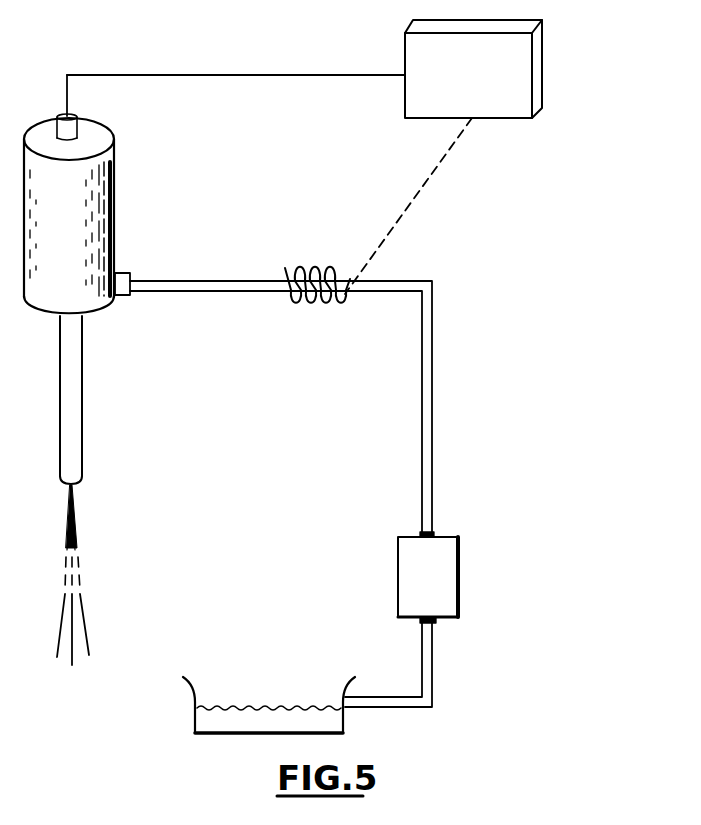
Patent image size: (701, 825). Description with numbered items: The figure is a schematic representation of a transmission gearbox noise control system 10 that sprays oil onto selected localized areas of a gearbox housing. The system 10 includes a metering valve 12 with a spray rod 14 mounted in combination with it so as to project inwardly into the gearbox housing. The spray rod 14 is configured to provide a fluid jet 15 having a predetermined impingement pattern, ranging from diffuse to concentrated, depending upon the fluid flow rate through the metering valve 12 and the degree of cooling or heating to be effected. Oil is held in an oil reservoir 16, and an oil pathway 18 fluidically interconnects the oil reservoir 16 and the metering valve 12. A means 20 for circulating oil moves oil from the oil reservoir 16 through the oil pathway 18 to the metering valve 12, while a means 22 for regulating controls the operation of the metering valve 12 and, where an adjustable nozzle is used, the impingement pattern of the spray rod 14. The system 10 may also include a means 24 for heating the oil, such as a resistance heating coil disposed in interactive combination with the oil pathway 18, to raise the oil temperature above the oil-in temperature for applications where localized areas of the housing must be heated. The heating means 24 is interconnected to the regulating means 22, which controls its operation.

The transmission gearbox noise control system 10 is at (540, 256).
The metering valve 12 is at (112, 184).
The spray rod 14 is at (77, 430).
The fluid jet 15 is at (78, 542).
The oil reservoir 16 is at (195, 706).
The oil pathway 18 is at (432, 458).
The means for circulating oil 20 is at (443, 585).
The means for regulating 22 is at (481, 85).
The means for heating the oil 24 is at (310, 300).